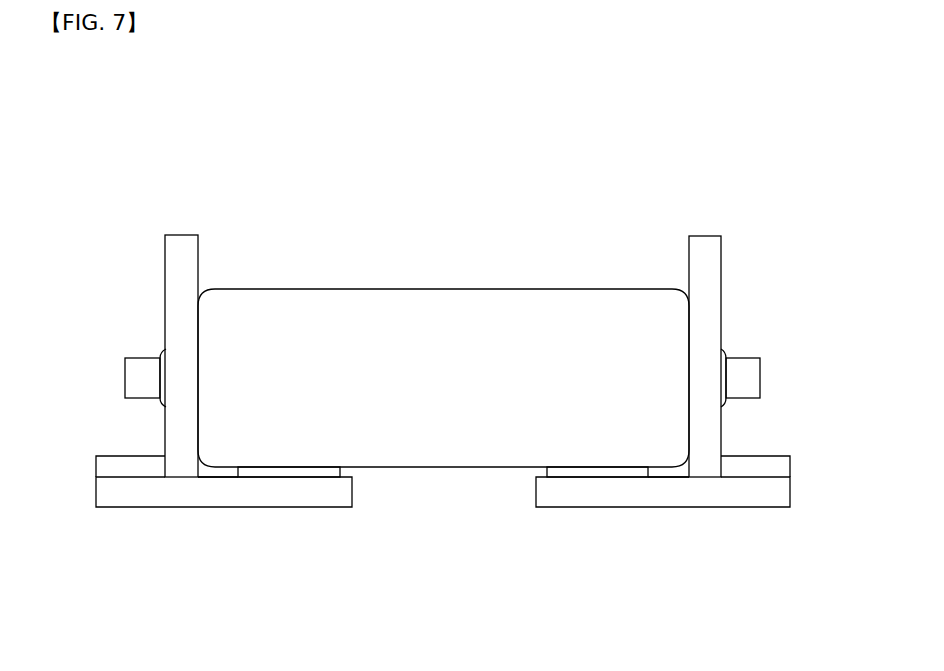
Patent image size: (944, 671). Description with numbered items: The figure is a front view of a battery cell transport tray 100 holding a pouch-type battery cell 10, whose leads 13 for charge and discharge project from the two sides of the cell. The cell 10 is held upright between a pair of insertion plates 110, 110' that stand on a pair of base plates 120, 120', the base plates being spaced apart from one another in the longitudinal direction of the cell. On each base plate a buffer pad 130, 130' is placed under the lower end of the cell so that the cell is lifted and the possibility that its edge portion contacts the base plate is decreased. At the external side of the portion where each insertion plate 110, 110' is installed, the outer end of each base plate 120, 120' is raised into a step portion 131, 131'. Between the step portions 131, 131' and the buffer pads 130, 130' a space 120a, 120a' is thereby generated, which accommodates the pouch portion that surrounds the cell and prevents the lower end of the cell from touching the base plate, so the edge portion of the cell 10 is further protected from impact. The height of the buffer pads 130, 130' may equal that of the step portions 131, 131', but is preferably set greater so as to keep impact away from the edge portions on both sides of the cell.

The battery module 100 is at (831, 121).
The battery cell 10 is at (437, 276).
The lead 13 is at (148, 377).
The first end plate 110 is at (143, 317).
The second end plate 110' is at (663, 327).
The base plate 120 is at (224, 561).
The base plate 120' is at (632, 548).
The space 120a is at (170, 538).
The space 120a' is at (629, 535).
The buffer pad 130 is at (270, 525).
The buffer pad 130' is at (540, 522).
The step portion 131 is at (106, 517).
The step portion 131' is at (790, 516).